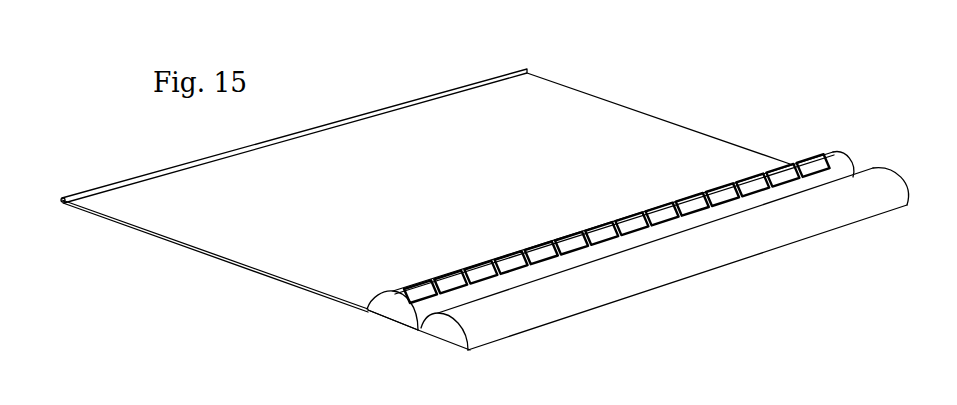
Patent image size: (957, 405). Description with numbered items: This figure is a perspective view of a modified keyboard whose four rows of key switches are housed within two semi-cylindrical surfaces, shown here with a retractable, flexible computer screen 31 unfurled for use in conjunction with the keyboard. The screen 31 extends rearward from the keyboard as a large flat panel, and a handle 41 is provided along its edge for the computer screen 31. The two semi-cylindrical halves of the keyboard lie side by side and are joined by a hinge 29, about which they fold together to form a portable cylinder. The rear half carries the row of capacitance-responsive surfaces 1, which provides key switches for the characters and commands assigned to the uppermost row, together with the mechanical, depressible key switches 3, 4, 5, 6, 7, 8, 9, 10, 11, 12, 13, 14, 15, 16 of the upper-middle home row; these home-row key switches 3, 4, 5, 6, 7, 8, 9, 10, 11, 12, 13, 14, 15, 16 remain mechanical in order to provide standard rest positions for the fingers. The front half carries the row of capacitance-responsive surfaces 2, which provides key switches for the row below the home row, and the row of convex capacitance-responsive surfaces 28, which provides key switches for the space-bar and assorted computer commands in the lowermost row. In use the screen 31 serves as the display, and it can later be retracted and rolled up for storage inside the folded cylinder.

The row of capacitance-responsive surfaces 1 is at (366, 299).
The row of capacitance-responsive surfaces 2 is at (437, 321).
The mechanical depressible key switch 3 is at (418, 287).
The mechanical depressible key switch 4 is at (449, 277).
The mechanical depressible key switch 5 is at (479, 267).
The mechanical depressible key switch 6 is at (509, 258).
The mechanical depressible key switch 7 is at (539, 248).
The mechanical depressible key switch 8 is at (569, 238).
The mechanical depressible key switch 9 is at (600, 229).
The mechanical depressible key switch 10 is at (630, 219).
The mechanical depressible key switch 11 is at (660, 209).
The mechanical depressible key switch 12 is at (690, 199).
The mechanical depressible key switch 13 is at (720, 190).
The mechanical depressible key switch 14 is at (751, 180).
The mechanical depressible key switch 15 is at (781, 170).
The mechanical depressible key switch 16 is at (811, 161).
The row of convex capacitance-responsive surfaces 28 is at (653, 276).
The hinge 29 is at (418, 331).
The retractable flexible computer screen 31 is at (262, 255).
The handle 41 is at (119, 183).